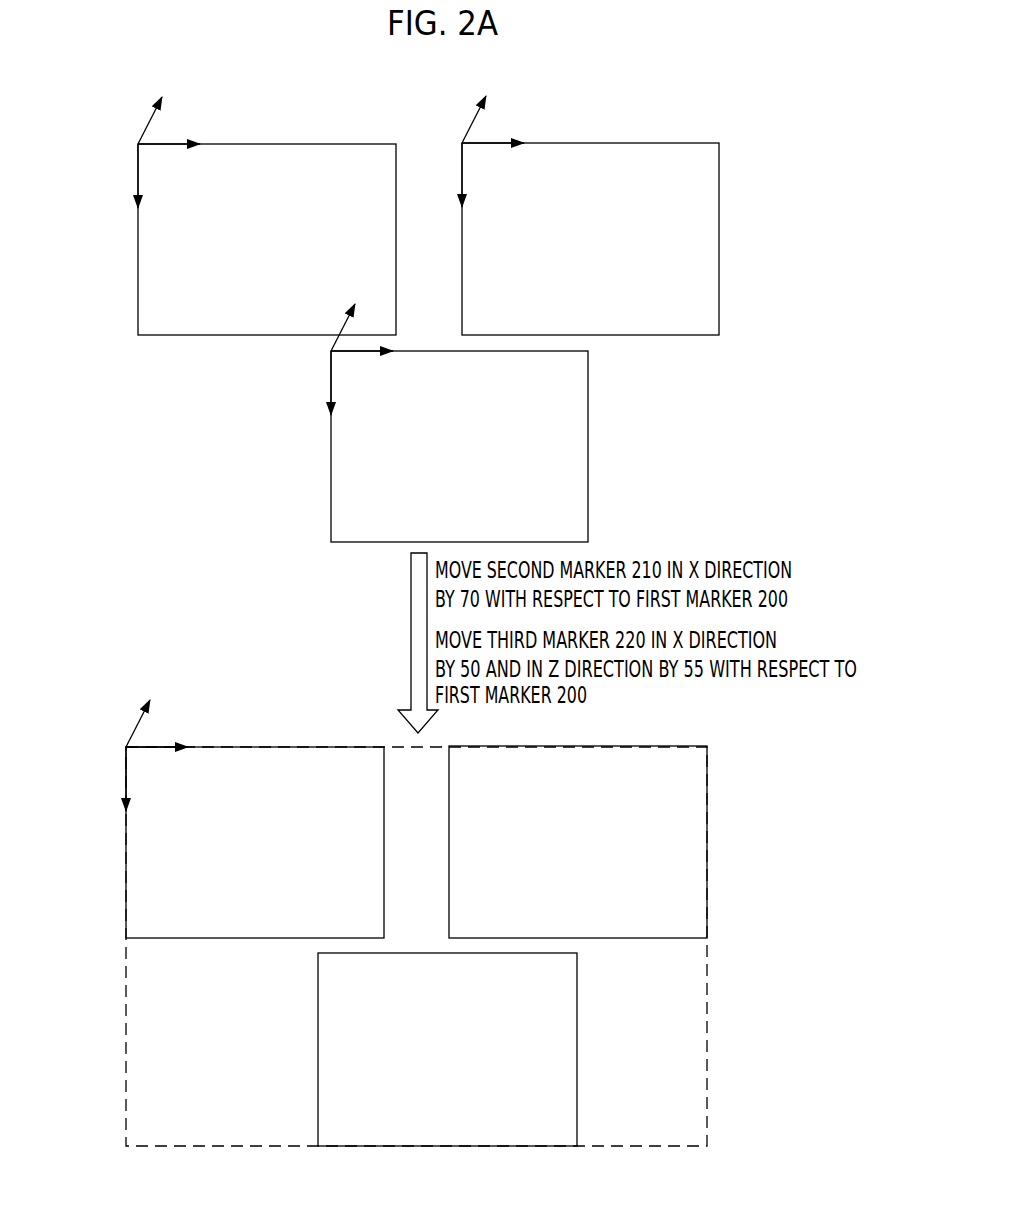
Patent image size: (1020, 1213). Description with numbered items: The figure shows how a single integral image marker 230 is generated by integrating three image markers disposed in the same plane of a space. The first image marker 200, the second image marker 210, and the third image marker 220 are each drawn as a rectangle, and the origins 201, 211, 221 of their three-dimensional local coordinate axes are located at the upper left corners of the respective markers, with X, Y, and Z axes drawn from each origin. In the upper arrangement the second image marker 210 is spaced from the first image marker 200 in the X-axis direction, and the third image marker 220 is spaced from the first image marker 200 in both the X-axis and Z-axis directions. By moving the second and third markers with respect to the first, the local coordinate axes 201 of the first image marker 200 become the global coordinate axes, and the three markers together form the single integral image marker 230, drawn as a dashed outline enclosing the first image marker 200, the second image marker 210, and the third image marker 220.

The first image marker 200 is at (138, 258).
The origin of 3D local coordinate axes of the first image marker 201 is at (134, 131).
The second image marker 210 is at (720, 236).
The origin of 3D local coordinate axes of the second image marker 211 is at (457, 133).
The third image marker 220 is at (590, 445).
The origin of 3D local coordinate axes of the third image marker 221 is at (318, 352).
The single integral image marker 230 is at (126, 1076).